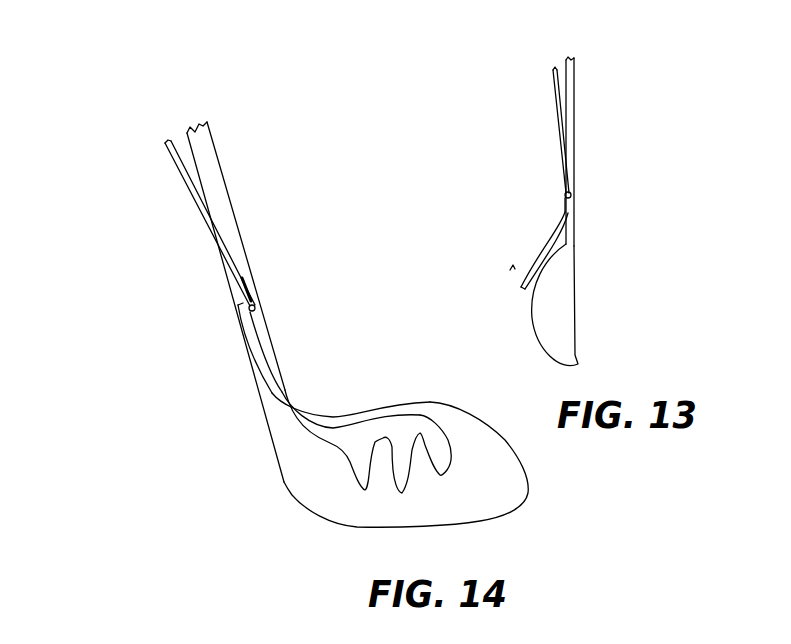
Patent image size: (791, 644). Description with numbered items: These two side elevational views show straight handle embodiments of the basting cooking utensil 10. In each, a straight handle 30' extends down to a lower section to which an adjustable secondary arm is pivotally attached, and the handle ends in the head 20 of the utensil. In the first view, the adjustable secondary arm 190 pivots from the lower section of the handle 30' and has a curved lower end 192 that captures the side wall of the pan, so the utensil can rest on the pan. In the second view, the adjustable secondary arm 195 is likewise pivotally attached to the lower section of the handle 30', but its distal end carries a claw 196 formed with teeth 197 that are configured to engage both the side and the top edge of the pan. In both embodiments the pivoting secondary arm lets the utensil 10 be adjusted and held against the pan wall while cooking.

In FIG. 14, the basting cooking utensil 10 is at (138, 148).
In FIG. 13, the basting cooking utensil 10 is at (520, 76).
In FIG. 14, the head 20 is at (412, 401).
In FIG. 13, the head 20 is at (575, 280).
In FIG. 14, the handle 30' is at (246, 302).
In FIG. 13, the handle 30' is at (621, 151).
In FIG. 14, the adjustable secondary arm 190 is at (210, 225).
In FIG. 13, the adjustable secondary arm 190 is at (556, 148).
In FIG. 13, the curved lower end 192 is at (538, 246).
In FIG. 14, the adjustable secondary arm 195 is at (245, 328).
In FIG. 14, the claw 196 is at (372, 413).
In FIG. 14, the teeth 197 is at (438, 471).